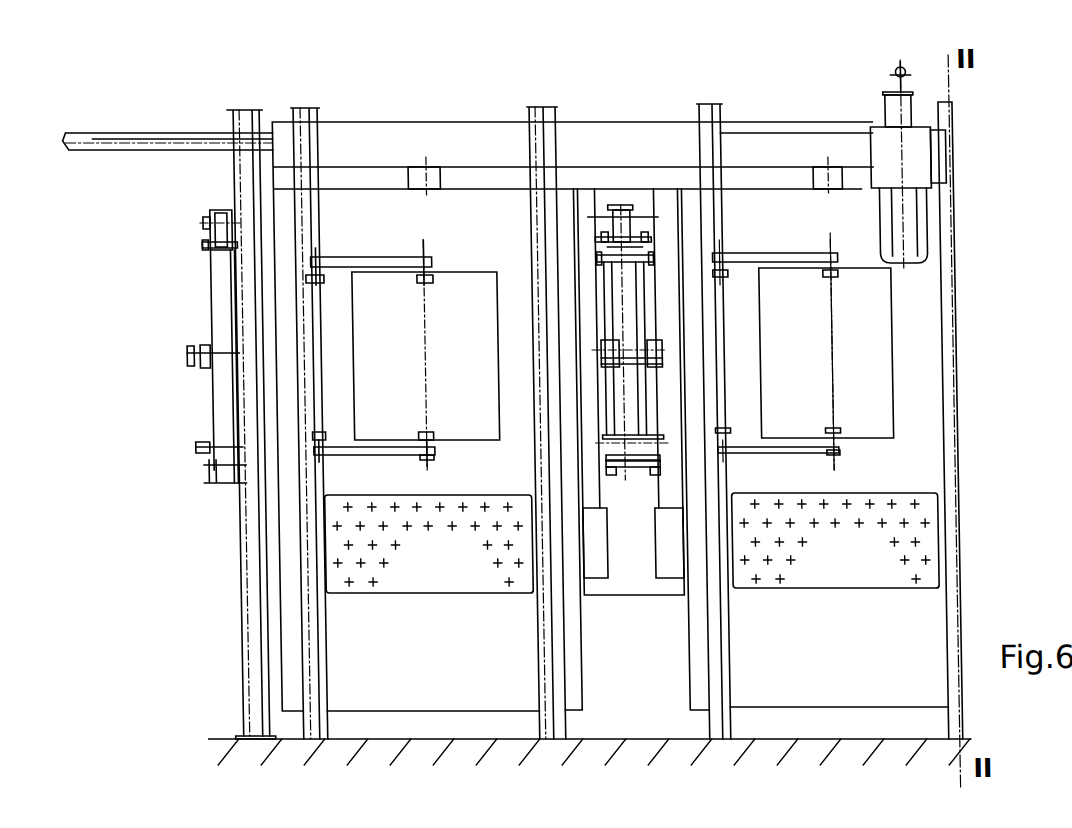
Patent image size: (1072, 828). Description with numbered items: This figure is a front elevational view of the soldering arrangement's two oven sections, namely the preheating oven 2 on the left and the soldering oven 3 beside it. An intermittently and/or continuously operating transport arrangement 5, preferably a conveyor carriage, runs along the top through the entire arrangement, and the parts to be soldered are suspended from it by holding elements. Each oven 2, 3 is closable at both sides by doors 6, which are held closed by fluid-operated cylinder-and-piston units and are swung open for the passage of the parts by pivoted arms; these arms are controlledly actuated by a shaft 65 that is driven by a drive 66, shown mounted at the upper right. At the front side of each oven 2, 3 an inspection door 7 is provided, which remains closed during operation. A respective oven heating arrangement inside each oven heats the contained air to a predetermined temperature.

The oven section 2 is at (488, 250).
The oven section 3 is at (768, 247).
The transport arrangement 5 is at (97, 151).
The door 6 is at (662, 484).
The inspection door 7 is at (469, 421).
The shaft 65 is at (200, 226).
The drive 66 is at (910, 243).